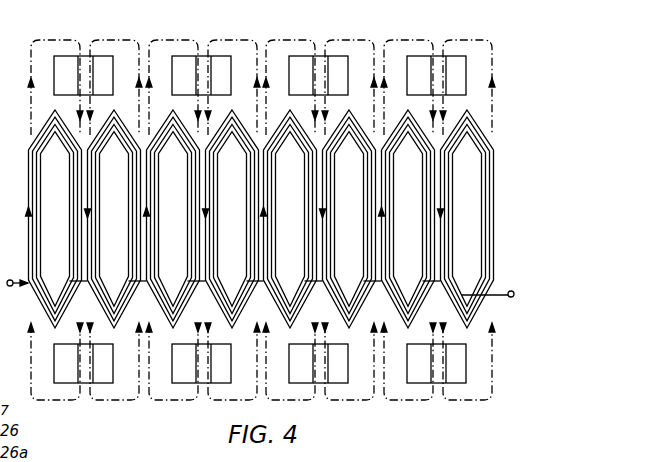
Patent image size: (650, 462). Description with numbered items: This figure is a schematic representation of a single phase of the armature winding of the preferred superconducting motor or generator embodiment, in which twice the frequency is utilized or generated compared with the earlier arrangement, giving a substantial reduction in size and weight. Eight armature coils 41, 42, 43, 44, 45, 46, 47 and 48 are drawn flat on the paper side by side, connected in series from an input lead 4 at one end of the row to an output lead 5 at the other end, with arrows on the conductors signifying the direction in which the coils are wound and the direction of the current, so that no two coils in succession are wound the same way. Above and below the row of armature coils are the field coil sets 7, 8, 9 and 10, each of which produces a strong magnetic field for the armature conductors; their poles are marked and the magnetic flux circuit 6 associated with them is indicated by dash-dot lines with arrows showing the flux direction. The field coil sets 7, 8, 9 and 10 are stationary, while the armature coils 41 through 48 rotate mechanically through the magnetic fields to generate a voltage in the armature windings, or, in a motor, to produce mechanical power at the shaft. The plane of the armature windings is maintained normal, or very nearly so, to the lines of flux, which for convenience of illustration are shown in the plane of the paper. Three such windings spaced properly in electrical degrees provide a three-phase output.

The input lead 4 is at (12, 285).
The output lead 5 is at (513, 297).
The magnetic flux path (dash-dot) 6 is at (66, 40).
The field coil set 7 is at (55, 58).
The field coil set 8 is at (173, 58).
The field coil set 9 is at (290, 58).
The field coil set 10 is at (408, 58).
The armature coil 41 is at (48, 217).
The armature coil 42 is at (107, 217).
The armature coil 43 is at (166, 217).
The armature coil 44 is at (225, 217).
The armature coil 45 is at (283, 217).
The armature coil 46 is at (342, 217).
The armature coil 47 is at (401, 217).
The armature coil 48 is at (460, 217).